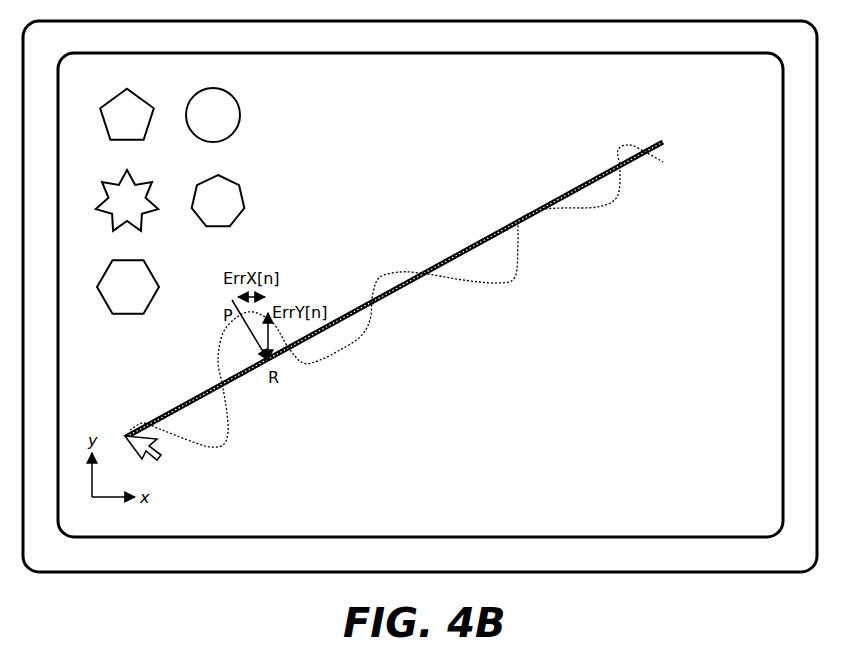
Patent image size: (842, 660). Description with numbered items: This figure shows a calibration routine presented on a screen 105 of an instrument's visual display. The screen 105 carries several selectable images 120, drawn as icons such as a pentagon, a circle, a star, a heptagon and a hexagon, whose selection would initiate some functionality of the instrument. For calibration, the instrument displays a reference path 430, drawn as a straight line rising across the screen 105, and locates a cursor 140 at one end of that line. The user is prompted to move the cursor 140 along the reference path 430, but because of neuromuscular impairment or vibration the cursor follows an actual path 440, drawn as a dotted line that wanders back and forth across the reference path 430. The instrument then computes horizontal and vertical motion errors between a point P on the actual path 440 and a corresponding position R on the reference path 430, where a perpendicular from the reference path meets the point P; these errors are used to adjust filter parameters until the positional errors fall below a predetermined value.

The screen 105 is at (738, 115).
The selectable images 120 is at (239, 185).
The reference path 430 is at (558, 197).
The actual path 440 is at (228, 432).
The cursor 140 is at (155, 455).